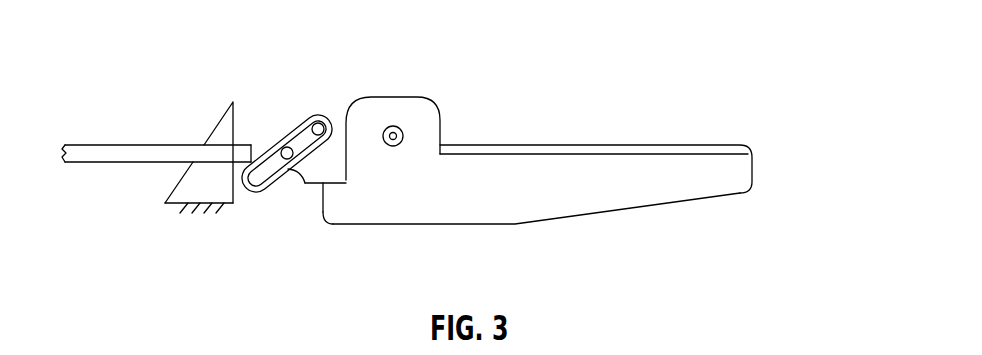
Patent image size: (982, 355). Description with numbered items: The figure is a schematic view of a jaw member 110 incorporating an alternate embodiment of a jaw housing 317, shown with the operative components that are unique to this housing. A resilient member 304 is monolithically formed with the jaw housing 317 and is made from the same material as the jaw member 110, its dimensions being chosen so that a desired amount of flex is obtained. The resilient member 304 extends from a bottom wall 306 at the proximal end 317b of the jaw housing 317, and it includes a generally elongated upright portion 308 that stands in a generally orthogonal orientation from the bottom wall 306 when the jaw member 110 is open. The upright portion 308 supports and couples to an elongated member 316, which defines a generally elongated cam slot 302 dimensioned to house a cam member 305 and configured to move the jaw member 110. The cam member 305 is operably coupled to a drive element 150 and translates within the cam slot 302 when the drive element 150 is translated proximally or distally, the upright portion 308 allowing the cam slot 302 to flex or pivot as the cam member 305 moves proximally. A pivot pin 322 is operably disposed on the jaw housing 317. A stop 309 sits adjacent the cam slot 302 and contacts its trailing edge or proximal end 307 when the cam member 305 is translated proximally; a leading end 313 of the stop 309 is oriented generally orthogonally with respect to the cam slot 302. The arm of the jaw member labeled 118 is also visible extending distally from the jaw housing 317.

The jaw member 110 is at (641, 86).
The arm 118 is at (712, 145).
The drive element 150 is at (151, 144).
The elongated cam slot 302 is at (299, 134).
The resilient member 304 is at (303, 167).
The cam member 305 is at (320, 123).
The bottom wall 306 is at (337, 178).
The proximal end 307 is at (247, 153).
The upright portion 308 is at (303, 184).
The stop 309 is at (200, 172).
The leading end 313 is at (237, 110).
The elongated member 316 is at (282, 138).
The jaw housing 317 is at (712, 197).
The proximal end 317b is at (327, 228).
The pivot pin 322 is at (403, 135).